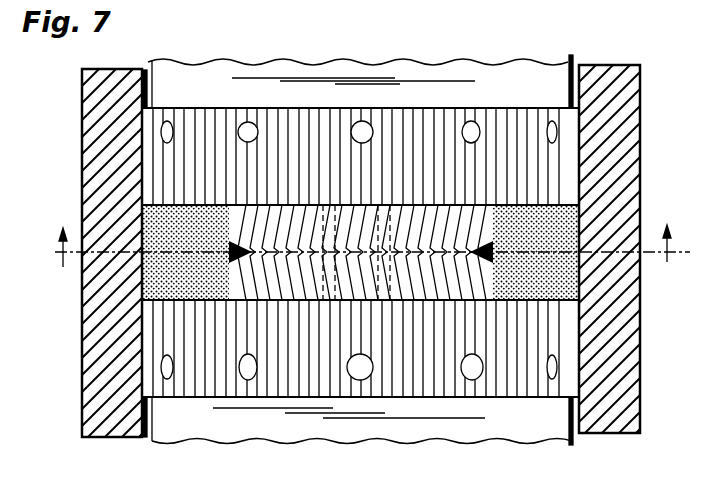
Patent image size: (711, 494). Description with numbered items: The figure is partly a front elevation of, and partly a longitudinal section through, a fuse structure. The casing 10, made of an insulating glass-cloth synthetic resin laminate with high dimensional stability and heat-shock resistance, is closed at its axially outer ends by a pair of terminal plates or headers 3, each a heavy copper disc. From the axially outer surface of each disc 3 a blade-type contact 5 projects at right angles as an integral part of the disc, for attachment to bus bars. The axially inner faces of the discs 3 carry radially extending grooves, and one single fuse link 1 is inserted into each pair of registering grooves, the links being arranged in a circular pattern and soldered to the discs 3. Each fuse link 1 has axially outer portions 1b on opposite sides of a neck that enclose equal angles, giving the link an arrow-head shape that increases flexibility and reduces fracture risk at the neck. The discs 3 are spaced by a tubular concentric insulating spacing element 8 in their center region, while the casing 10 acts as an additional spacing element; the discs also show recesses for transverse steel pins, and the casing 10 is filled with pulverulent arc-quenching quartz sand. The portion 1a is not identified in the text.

The fuse link 1 is at (201, 205).
The corrugated plate portion 1a is at (276, 250).
The axially outer portion of fuse link 1b is at (372, 204).
The terminal plate or header 3 is at (181, 122).
The blade-type contact 5 is at (573, 63).
The tubular spacing element 8 is at (370, 234).
The casing 10 is at (100, 360).